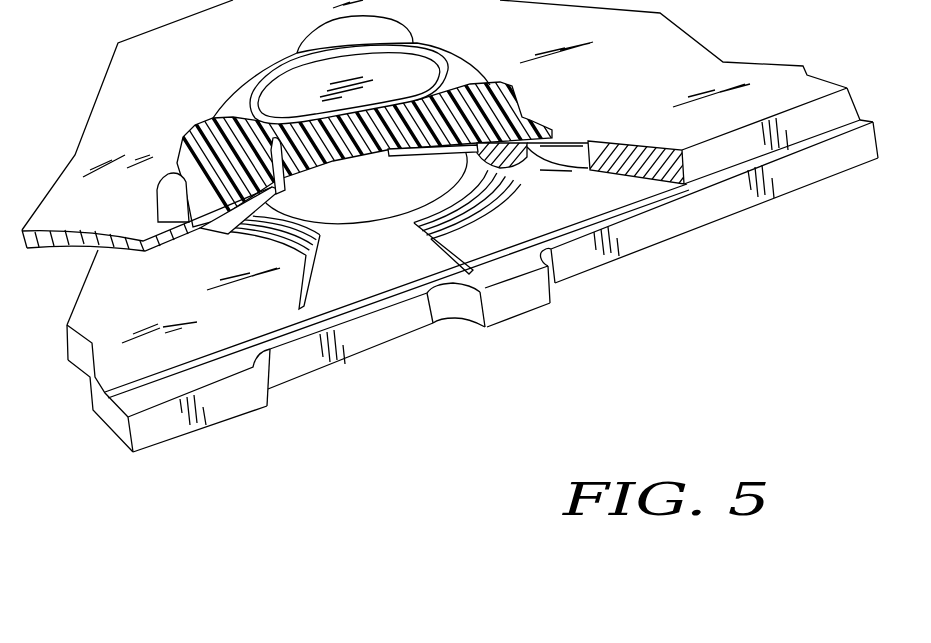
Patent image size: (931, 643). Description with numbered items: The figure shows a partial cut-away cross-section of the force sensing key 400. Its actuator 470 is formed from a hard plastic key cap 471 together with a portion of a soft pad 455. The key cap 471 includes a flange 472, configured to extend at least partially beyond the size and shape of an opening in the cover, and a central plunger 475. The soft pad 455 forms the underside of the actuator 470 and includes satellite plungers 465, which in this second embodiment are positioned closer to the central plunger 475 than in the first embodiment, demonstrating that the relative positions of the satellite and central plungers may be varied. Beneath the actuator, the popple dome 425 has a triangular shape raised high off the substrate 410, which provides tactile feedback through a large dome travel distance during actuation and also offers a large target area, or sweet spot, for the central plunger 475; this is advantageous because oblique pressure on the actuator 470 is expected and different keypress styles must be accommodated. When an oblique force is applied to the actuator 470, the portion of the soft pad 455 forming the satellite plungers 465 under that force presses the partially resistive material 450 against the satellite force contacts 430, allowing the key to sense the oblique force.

The force sensing key 400 is at (737, 364).
The substrate 410 is at (727, 207).
The partially resistive material 450 is at (637, 195).
The popple dome 425 is at (370, 205).
The satellite force contacts 430 is at (497, 195).
The soft pad 455 is at (610, 145).
The satellite plungers 465 is at (233, 220).
The actuator 470 is at (255, 155).
The key cap 471 is at (212, 133).
The flange 472 is at (187, 207).
The central plunger 475 is at (365, 160).